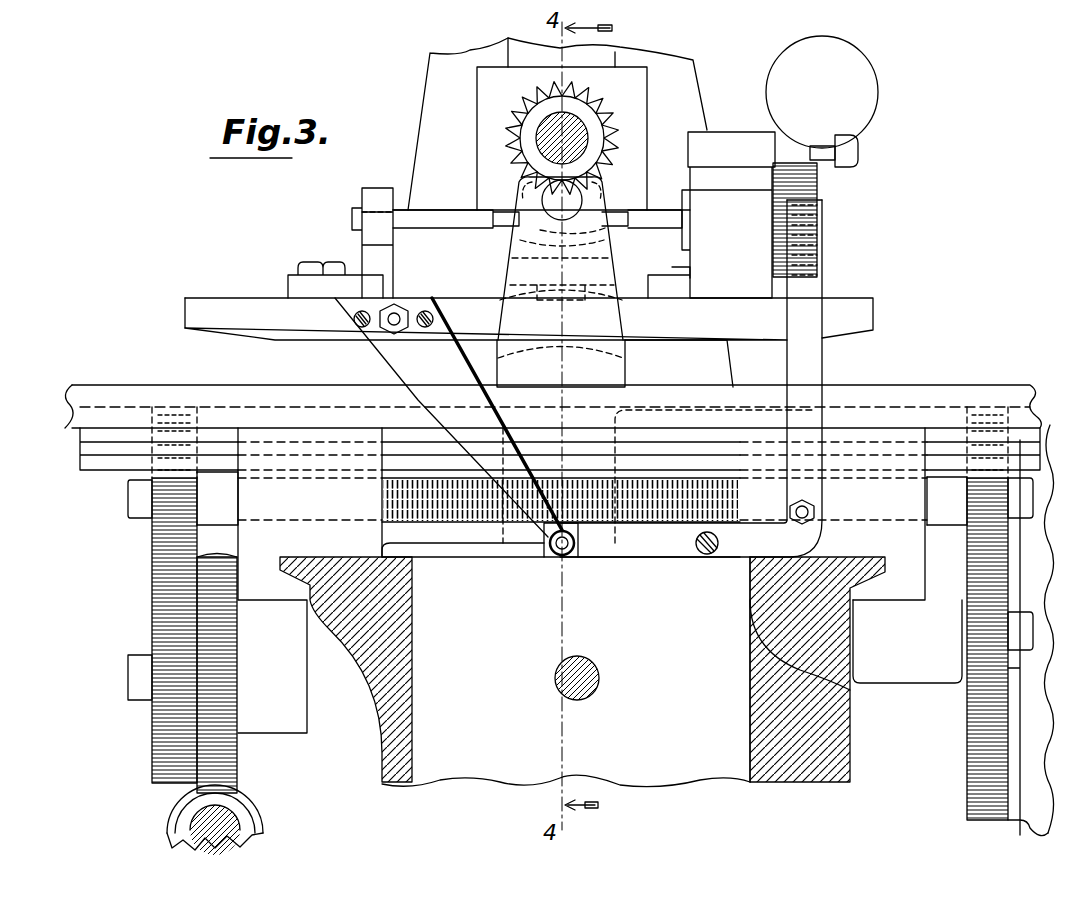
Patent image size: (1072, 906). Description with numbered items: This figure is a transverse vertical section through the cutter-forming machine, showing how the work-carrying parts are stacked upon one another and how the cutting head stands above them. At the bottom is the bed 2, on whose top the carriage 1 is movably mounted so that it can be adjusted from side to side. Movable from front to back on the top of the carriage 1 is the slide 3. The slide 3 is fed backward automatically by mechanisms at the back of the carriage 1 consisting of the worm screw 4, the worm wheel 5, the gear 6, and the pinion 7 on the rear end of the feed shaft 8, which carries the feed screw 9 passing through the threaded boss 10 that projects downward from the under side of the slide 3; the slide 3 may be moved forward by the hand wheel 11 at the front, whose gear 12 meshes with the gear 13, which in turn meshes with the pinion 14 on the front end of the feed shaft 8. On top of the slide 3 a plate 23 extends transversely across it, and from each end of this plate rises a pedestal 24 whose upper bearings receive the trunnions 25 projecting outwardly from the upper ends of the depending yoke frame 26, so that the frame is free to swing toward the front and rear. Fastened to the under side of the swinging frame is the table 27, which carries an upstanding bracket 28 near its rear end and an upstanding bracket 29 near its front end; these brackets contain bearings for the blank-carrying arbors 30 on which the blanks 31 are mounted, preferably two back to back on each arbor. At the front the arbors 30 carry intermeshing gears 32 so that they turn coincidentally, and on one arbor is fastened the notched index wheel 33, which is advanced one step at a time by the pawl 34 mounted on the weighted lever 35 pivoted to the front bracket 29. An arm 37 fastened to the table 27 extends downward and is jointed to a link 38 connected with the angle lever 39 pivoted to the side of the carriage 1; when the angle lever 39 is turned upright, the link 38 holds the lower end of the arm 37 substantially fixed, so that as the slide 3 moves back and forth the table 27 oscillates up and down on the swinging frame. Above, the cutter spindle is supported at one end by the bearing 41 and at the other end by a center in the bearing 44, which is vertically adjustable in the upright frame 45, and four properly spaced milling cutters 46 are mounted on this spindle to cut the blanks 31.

The carriage 1 is at (582, 580).
The bed 2 is at (582, 672).
The slide 3 is at (553, 427).
The worm screw 4 is at (178, 826).
The worm wheel 5 is at (240, 772).
The gear 6 is at (152, 752).
The pinion 7 is at (152, 553).
The feed shaft 8 is at (574, 498).
The feed screw 9 is at (468, 528).
The threaded boss 10 is at (503, 528).
The hand wheel 11 is at (1020, 822).
The gear 12 is at (967, 766).
The gear 13 is at (967, 710).
The pinion 14 is at (967, 575).
The plate 23 is at (628, 372).
The pedestal 24 is at (560, 258).
The trunnions 25 is at (545, 212).
The yoke frame 26 is at (519, 280).
The table 27 is at (529, 319).
The bracket 28 is at (378, 266).
The bracket 29 is at (700, 259).
The blank-carrying arbors 30 is at (450, 214).
The blanks 31 is at (606, 238).
The gears 32 is at (820, 186).
The index wheel 33 is at (824, 214).
The pawl 34 is at (835, 150).
The weighted lever 35 is at (858, 165).
The arm 37 is at (448, 417).
The link 38 is at (660, 565).
The angle lever 39 is at (691, 378).
The bearing 41 is at (585, 130).
The bearing 44 is at (562, 138).
The upright frame 45 is at (550, 124).
The milling cutters 46 is at (592, 112).